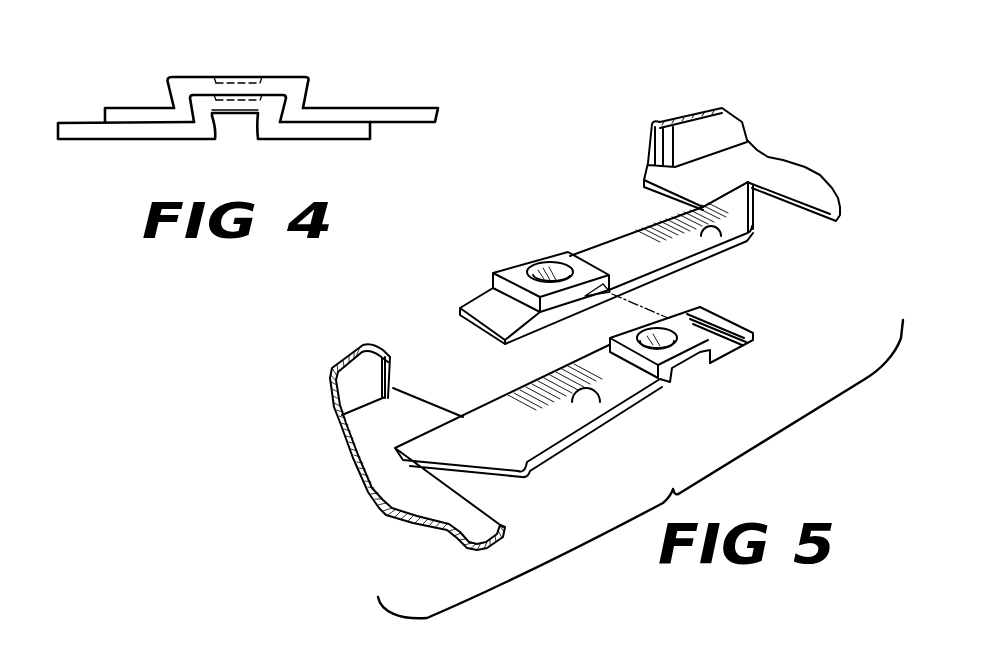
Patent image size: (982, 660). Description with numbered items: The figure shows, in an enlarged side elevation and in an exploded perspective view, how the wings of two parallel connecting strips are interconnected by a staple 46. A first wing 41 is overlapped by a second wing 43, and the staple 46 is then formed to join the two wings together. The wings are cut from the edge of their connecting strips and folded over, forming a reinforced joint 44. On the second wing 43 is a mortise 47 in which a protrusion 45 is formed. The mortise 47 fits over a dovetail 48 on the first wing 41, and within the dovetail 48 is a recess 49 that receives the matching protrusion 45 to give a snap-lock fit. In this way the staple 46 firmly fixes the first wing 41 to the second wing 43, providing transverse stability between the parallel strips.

In FIG. 4, the first wing 41 is at (88, 126).
In FIG. 5, the first wing 41 is at (596, 406).
In FIG. 4, the second wing 43 is at (370, 115).
In FIG. 5, the second wing 43 is at (710, 228).
In FIG. 5, the reinforced joint 44 is at (450, 440).
In FIG. 4, the protrusion 45 is at (239, 82).
In FIG. 5, the protrusion 45 is at (550, 267).
In FIG. 4, the staple 46 is at (222, 48).
In FIG. 5, the staple 46 is at (528, 230).
In FIG. 4, the mortise 47 is at (290, 83).
In FIG. 5, the mortise 47 is at (512, 273).
In FIG. 4, the dovetail 48 is at (267, 133).
In FIG. 5, the dovetail 48 is at (620, 331).
In FIG. 4, the recess 49 is at (240, 115).
In FIG. 5, the recess 49 is at (655, 333).